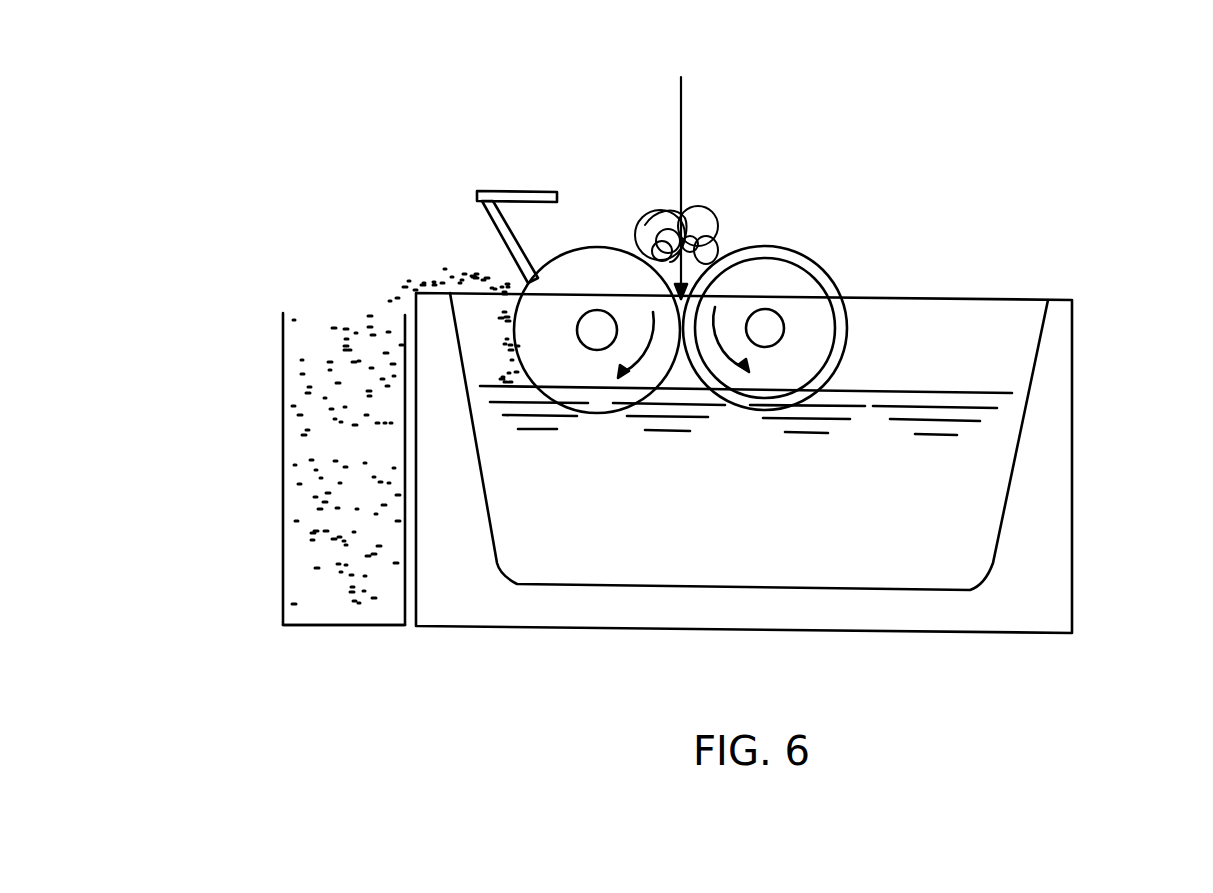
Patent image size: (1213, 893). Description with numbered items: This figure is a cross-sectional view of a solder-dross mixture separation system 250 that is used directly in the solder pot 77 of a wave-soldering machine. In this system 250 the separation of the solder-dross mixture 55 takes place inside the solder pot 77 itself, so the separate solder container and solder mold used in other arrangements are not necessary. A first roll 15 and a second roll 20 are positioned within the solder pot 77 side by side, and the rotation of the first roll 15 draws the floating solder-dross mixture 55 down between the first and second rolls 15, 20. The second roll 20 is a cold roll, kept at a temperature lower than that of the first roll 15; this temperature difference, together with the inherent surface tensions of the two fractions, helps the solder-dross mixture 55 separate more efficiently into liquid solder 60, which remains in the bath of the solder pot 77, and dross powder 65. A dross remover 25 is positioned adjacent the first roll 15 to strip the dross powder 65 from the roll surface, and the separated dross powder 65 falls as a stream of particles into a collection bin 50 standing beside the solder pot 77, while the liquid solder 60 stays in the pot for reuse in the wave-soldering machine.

The first roll 15 is at (590, 248).
The second roll 20 is at (820, 265).
The dross remover 25 is at (506, 192).
The hopper 50 is at (282, 535).
The solder-dross mixture 55 is at (703, 227).
The liquid solder 60 is at (920, 423).
The dross powder 65 is at (333, 341).
The solder pot 77 is at (1072, 360).
The solder-dross mixture separation system 250 is at (418, 693).